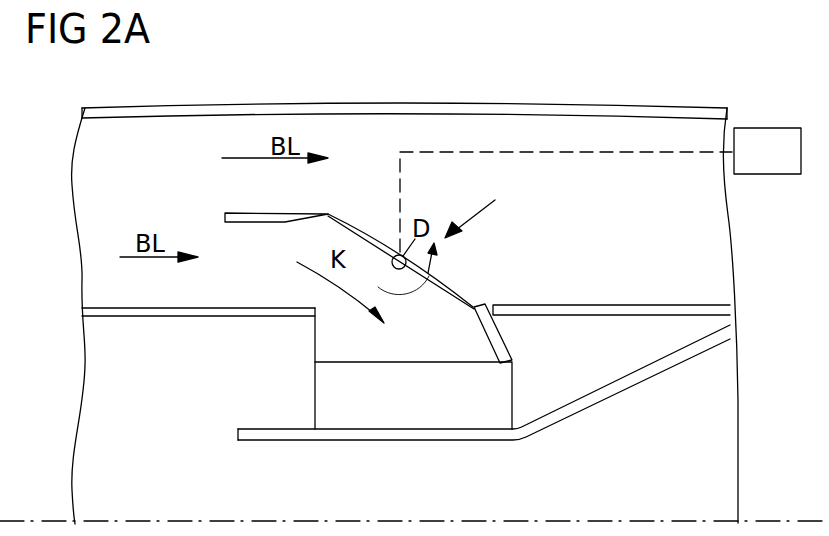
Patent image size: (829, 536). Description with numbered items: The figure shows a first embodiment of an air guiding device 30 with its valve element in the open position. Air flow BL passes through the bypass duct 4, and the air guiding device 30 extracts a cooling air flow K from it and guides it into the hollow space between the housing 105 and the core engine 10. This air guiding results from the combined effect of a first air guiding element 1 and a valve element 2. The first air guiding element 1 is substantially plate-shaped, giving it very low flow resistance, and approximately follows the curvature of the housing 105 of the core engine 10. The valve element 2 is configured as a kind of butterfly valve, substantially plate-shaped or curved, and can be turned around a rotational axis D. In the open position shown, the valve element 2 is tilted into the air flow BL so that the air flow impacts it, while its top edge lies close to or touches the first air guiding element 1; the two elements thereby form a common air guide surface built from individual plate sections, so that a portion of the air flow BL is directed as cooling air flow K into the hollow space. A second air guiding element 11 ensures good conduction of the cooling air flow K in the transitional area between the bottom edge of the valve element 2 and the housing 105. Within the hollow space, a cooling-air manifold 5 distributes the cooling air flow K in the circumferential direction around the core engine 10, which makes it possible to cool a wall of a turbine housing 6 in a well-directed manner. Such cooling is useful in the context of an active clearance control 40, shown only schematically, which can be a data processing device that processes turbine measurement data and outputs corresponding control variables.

The first air guiding element 1 is at (282, 215).
The valve element 2 is at (382, 250).
The bypass duct 4 is at (627, 199).
The cooling-air manifold 5 is at (487, 390).
The turbine housing 6 is at (637, 380).
The core engine 10 is at (609, 493).
The second air guiding element 11 is at (486, 306).
The air guiding device 30 is at (486, 206).
The active clearance control 40 is at (780, 166).
The housing 105 is at (163, 312).